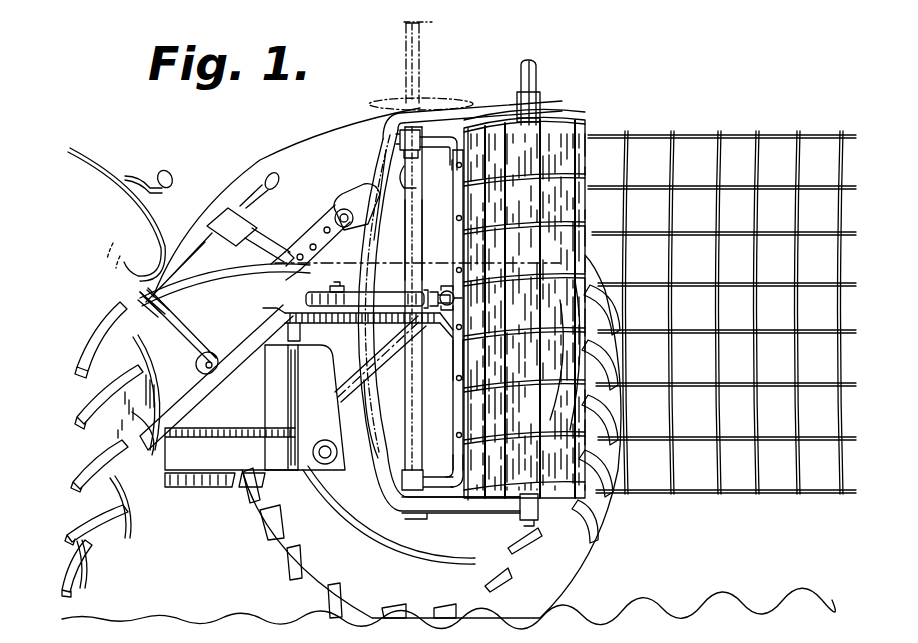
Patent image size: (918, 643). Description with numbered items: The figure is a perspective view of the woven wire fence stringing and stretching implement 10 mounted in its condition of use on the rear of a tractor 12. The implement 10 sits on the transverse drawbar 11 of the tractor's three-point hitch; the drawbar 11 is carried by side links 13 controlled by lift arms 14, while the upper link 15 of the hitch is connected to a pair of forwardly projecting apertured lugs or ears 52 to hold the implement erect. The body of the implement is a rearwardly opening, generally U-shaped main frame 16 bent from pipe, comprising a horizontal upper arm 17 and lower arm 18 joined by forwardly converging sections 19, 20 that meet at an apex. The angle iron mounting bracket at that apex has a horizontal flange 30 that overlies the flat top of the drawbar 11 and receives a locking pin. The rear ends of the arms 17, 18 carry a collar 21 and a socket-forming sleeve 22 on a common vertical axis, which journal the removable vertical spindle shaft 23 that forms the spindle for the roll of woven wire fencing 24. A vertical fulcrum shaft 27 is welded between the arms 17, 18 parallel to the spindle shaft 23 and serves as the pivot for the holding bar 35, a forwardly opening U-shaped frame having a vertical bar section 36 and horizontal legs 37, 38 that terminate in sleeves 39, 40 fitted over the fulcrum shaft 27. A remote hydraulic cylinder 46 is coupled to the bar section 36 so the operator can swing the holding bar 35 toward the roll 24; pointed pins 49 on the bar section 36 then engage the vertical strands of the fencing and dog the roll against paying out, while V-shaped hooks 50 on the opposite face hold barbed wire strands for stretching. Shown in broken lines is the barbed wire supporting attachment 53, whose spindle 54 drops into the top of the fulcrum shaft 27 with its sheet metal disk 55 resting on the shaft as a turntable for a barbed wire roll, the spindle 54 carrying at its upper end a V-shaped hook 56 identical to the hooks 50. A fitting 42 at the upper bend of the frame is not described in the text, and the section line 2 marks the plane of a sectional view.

The section line 2- 2 is at (275, 263).
The woven wire fence stringing and stretching implement 10 is at (457, 100).
The transverse drawbar 11 is at (371, 322).
The tractor 12 is at (217, 190).
The side links 13 is at (194, 390).
The lift arms 14 is at (179, 344).
The upper link 15 is at (302, 248).
The main frame 16 is at (380, 185).
The upper arm 17 is at (488, 107).
The lower arm 18 is at (473, 513).
The upper forwardly converging section 19 is at (382, 186).
The lower forwardly converging section 20 is at (377, 430).
The collar 21 is at (538, 100).
The socket-forming sleeve 22 is at (538, 514).
The spindle shaft 23 is at (532, 64).
The roll of woven wire fencing 24 is at (572, 477).
The fulcrum shaft 27 is at (418, 252).
The horizontal flange 30 is at (336, 293).
The holding bar 35 is at (451, 411).
The vertical bar section 36 is at (454, 357).
The upper horizontal leg 37 is at (438, 157).
The lower horizontal leg 38 is at (442, 464).
The sleeve 39 is at (418, 180).
The sleeve 40 is at (400, 478).
The upper bracket 42 is at (400, 152).
The remote hydraulic cylinder 46 is at (388, 298).
The pointed pins 49 is at (469, 218).
The V-shaped hooks 50 is at (455, 270).
The apertured lugs or ears 52 is at (354, 210).
The barbed wire supporting attachment 53 is at (424, 59).
The spindle 54 is at (406, 68).
The sheet metal disk 55 is at (368, 100).
The V-shaped hook 56 is at (430, 24).